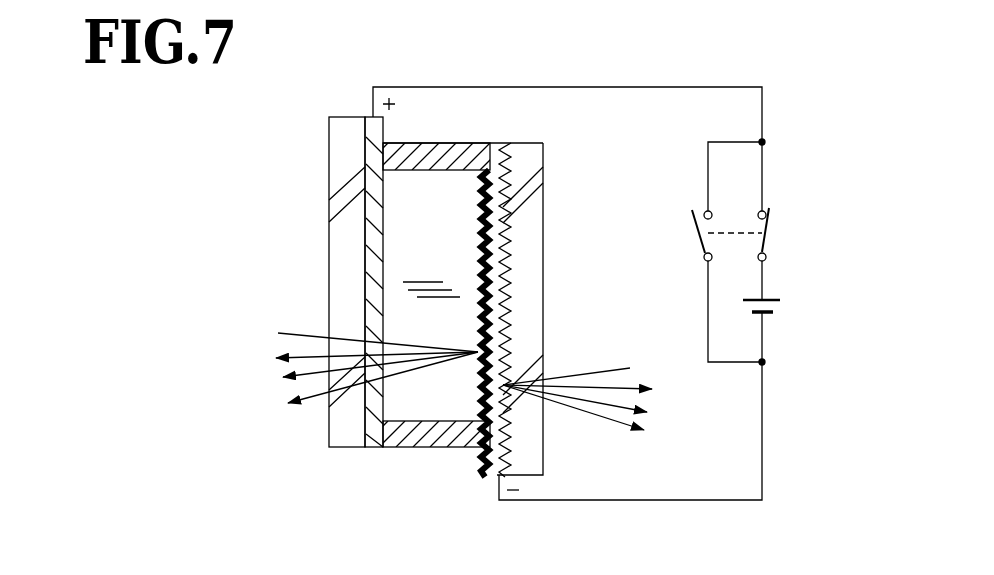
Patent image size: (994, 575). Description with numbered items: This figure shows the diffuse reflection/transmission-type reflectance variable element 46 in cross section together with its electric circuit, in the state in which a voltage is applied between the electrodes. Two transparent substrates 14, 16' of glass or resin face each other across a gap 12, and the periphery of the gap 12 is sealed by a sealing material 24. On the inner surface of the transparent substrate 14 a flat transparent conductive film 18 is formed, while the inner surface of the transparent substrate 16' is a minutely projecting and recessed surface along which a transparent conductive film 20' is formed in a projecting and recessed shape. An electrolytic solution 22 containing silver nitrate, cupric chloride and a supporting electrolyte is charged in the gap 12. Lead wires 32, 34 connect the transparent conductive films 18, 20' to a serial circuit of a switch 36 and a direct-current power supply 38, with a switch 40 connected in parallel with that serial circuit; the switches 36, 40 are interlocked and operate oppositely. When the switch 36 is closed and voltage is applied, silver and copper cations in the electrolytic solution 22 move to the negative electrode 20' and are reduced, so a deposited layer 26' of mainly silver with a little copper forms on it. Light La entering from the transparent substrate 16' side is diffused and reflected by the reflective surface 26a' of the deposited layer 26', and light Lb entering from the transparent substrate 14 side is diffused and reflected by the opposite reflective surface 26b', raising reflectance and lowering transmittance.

The diffuse reflection/transmission-type reflectance variable element 46 is at (467, 117).
The lead wire 32 is at (626, 87).
The lead wire 34 is at (622, 500).
The switch 40 is at (692, 228).
The switch 36 is at (768, 228).
The direct-current power supply 38 is at (783, 307).
The transparent substrate 14 is at (337, 288).
The transparent conductive film 18 is at (370, 447).
The sealing material 24 is at (430, 143).
The electrolytic solution 22 is at (433, 402).
The gap 12 is at (453, 413).
The transparent conductive film 20' is at (431, 257).
The transparent substrate 16' is at (556, 309).
The deposited layer 26' is at (431, 310).
The reflective surface 26a' is at (559, 310).
The reflective surface 26b' is at (366, 323).
The light Lb is at (305, 333).
The light La is at (602, 368).